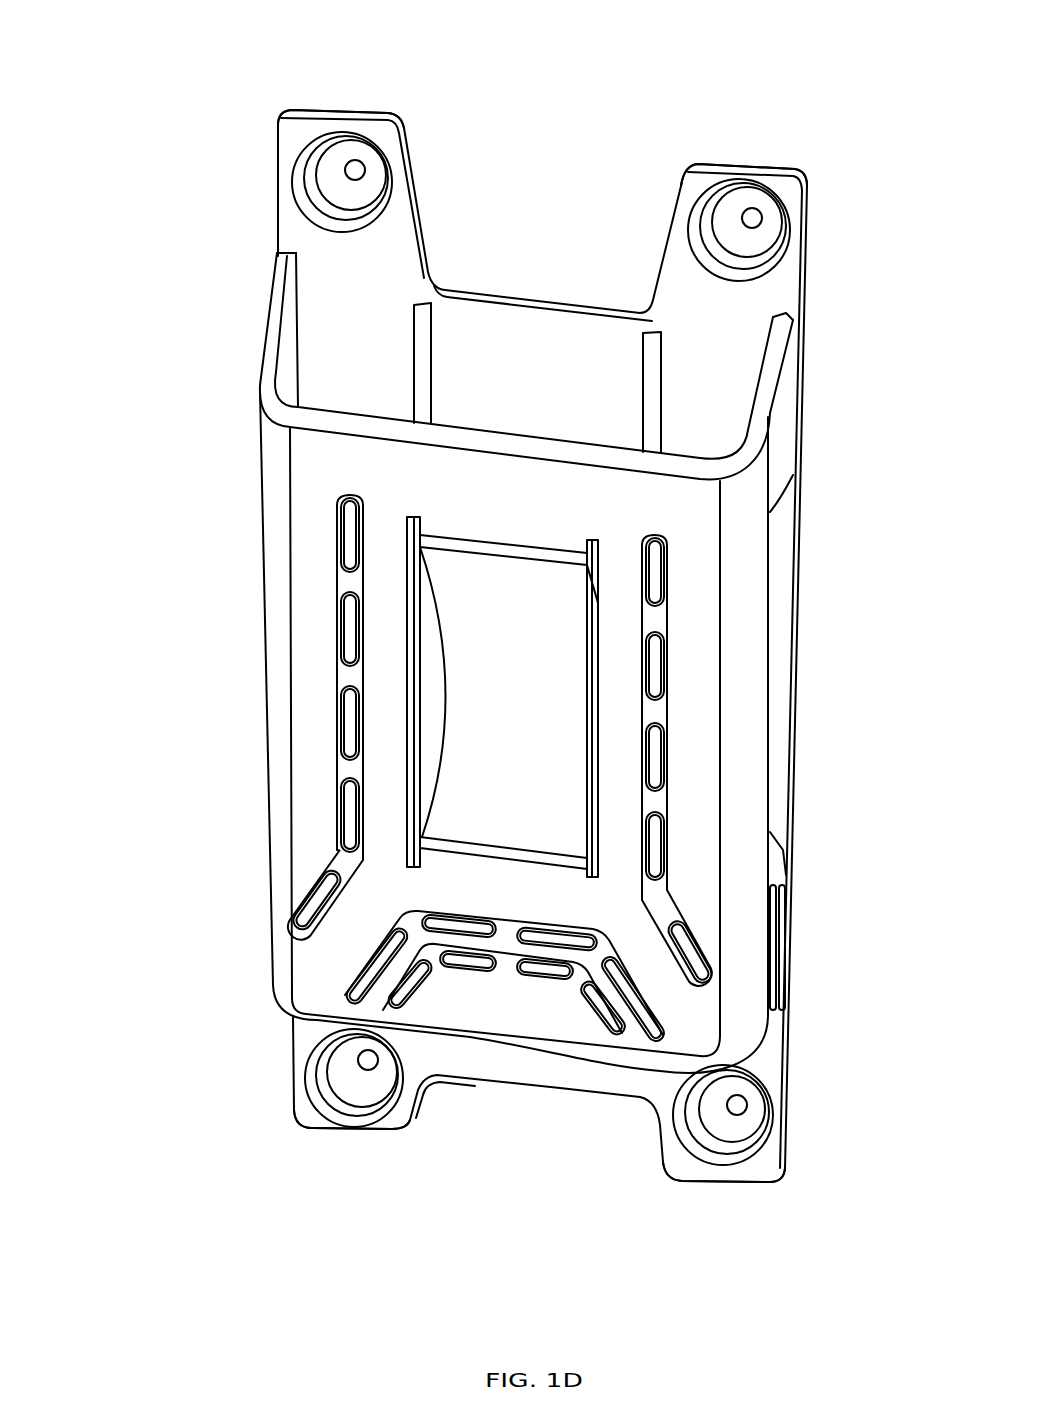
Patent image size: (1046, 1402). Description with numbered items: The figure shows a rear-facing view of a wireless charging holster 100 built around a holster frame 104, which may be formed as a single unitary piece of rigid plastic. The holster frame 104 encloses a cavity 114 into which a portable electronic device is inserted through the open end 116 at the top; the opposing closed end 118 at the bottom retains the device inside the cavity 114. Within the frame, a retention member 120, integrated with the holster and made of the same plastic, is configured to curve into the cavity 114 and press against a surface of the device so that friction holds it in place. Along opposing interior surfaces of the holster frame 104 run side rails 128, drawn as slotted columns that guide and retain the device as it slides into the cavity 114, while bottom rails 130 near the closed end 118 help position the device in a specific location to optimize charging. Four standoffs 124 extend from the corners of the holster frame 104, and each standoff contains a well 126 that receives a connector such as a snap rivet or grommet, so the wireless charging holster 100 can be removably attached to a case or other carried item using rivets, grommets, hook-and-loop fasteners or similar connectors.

The wireless charging holster 100 is at (176, 615).
The holster frame 104 is at (773, 727).
The cavity 114 is at (549, 392).
The open end 116 is at (480, 437).
The closed end 118 is at (505, 1043).
The retention member 120 is at (489, 753).
The standoffs 124 is at (298, 130).
The well 126 is at (352, 170).
The side rails 128 is at (420, 350).
The bottom rails 130 is at (483, 927).